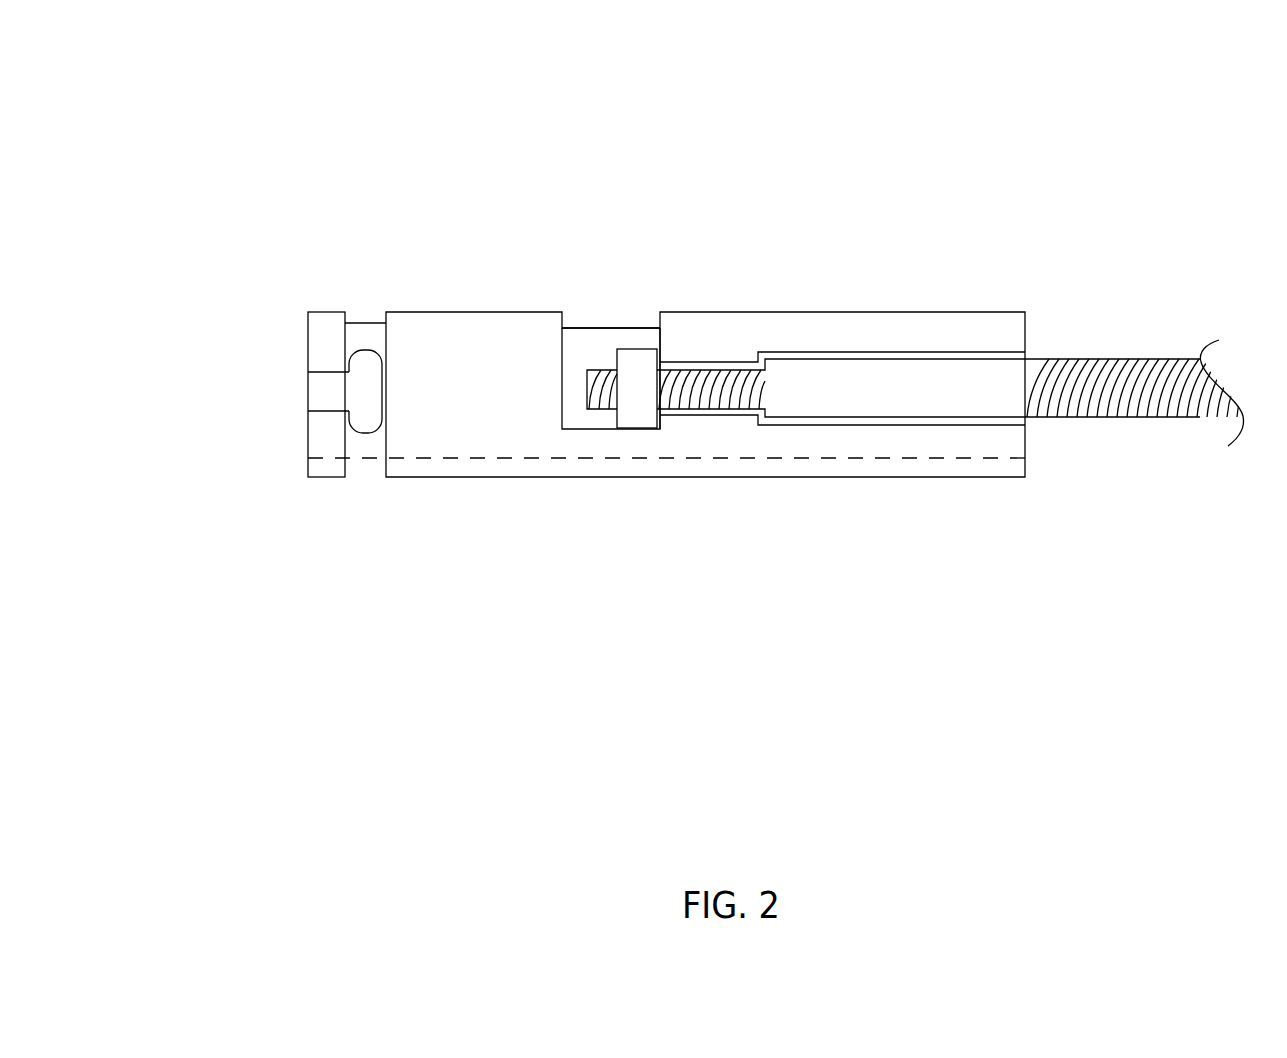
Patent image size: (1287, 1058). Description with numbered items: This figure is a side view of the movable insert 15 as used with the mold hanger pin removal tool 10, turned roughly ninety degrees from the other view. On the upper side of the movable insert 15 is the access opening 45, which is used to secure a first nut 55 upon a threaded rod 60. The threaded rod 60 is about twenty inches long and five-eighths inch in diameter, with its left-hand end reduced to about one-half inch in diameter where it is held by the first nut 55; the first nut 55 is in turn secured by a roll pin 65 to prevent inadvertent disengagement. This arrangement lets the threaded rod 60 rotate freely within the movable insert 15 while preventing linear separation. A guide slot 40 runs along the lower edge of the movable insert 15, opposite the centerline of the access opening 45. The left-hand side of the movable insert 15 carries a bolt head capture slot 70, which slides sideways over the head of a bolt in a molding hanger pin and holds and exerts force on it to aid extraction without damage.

The mold hanger pin removal tool 10 is at (332, 772).
The movable insert 15 is at (492, 312).
The guide slot 40 is at (744, 460).
The access opening 45 is at (622, 326).
The first nut 55 is at (657, 348).
The threaded rod 60 is at (1135, 358).
The roll pin 65 is at (626, 424).
The bolt head capture slot 70 is at (359, 388).